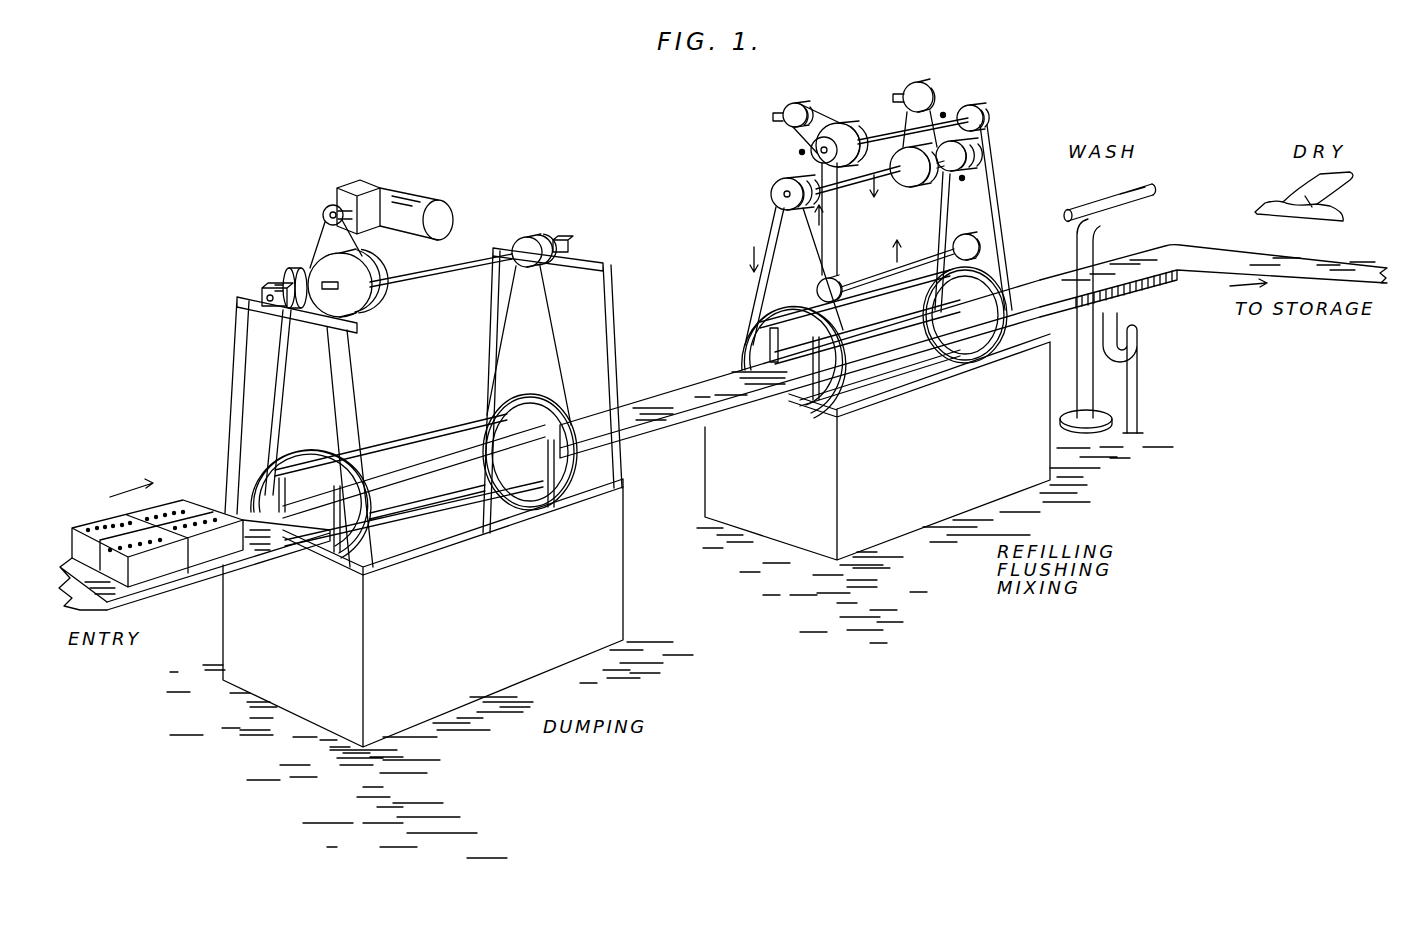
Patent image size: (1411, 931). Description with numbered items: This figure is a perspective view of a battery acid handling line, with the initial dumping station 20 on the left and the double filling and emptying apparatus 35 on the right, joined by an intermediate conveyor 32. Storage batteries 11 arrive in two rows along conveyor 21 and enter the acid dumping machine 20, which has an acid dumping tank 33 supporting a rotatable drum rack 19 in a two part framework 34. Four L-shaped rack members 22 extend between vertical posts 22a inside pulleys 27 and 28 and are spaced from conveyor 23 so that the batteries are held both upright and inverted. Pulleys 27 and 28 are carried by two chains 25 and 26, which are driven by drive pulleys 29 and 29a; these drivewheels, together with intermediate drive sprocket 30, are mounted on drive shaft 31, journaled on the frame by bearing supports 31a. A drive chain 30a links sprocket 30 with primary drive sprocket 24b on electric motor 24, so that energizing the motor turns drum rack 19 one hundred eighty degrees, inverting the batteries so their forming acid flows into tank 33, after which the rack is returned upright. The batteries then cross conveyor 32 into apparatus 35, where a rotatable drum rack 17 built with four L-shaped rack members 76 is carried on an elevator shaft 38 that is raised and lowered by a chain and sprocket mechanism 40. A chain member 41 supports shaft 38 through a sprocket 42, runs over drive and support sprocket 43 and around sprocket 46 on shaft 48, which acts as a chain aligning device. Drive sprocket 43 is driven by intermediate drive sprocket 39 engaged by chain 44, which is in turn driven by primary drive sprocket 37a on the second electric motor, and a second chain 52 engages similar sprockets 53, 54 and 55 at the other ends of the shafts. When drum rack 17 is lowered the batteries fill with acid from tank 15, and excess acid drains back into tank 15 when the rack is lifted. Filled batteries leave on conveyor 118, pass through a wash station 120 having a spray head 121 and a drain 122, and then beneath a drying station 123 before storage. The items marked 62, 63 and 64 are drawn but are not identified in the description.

The storage batteries 11 is at (147, 573).
The tank 15 is at (897, 500).
The rotatable drum rack 17 is at (856, 342).
The rotatable drum rack 19 is at (432, 479).
The initial dumping station 20 is at (425, 404).
The conveyor 21 is at (230, 567).
The L-shaped rack members 22 is at (446, 431).
The vertical posts 22a is at (553, 488).
The conveyor 23 is at (473, 481).
The electric motor 24 is at (380, 210).
The primary drive sprocket 24b is at (336, 210).
The chain 25 is at (270, 405).
The chain 26 is at (560, 351).
The pulley 27 is at (308, 453).
The pulley 28 is at (522, 403).
The drive pulley 29 is at (292, 280).
The drive pulley 29a is at (543, 231).
The intermediate drive sprocket 30 is at (372, 303).
The drive chain 30a is at (321, 245).
The drive shaft 31 is at (476, 258).
The bearing supports 31a is at (260, 292).
The intermediate conveyor 32 is at (677, 397).
The acid dumping tank 33 is at (605, 592).
The framework 34 is at (235, 350).
The double filling and emptying apparatus 35 is at (767, 200).
The primary drive sprocket 37a is at (797, 103).
The elevator shaft 38 is at (890, 173).
The intermediate drive sprocket 39 is at (847, 132).
The chain and sprocket mechanism 40 is at (977, 200).
The chain member 41 is at (800, 153).
The sprocket 42 is at (823, 196).
The drive and support sprocket 43 is at (812, 137).
The chain 44 is at (826, 118).
The sprocket 46 is at (815, 290).
The shaft 48 is at (875, 274).
The second chain 52 is at (985, 224).
The sprocket 53 is at (983, 108).
The sprocket 54 is at (953, 172).
The sprocket 55 is at (988, 253).
The pulley 62 is at (905, 158).
The belt 63 is at (934, 104).
The pulley 64 is at (920, 86).
The L-shaped rack members 76 is at (899, 310).
The conveyor 118 is at (1213, 268).
The wash station 120 is at (1133, 299).
The spray head 121 is at (1127, 203).
The drain 122 is at (1140, 297).
The drying station 123 is at (1273, 204).